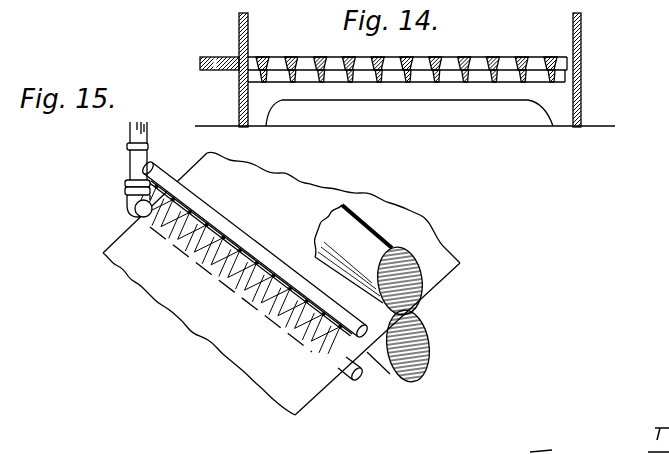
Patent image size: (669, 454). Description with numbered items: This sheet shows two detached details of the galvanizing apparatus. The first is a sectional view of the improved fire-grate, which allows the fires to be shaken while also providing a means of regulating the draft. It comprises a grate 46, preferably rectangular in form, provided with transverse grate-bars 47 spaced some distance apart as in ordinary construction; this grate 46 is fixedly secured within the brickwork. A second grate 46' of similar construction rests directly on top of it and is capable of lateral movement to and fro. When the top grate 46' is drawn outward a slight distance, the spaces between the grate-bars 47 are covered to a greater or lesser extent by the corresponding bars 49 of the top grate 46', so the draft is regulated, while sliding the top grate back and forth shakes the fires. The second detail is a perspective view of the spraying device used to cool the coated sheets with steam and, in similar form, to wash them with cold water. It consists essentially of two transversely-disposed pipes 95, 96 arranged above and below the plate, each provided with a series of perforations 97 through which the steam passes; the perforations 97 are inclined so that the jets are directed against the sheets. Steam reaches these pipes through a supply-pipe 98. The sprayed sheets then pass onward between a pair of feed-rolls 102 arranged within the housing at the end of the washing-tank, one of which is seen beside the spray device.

In FIG. 14, the grate 46 is at (441, 73).
In FIG. 14, the top grate 46' is at (420, 70).
In FIG. 14, the grate-bars 47 is at (520, 83).
In FIG. 14, the bars 49 is at (493, 57).
In FIG. 15, the transversely-disposed pipe 95 is at (207, 128).
In FIG. 15, the transversely-disposed pipe 96 is at (135, 211).
In FIG. 15, the perforations 97 is at (163, 193).
In FIG. 15, the supply-pipe 98 is at (133, 131).
In FIG. 15, the feed-rolls 102 is at (371, 261).